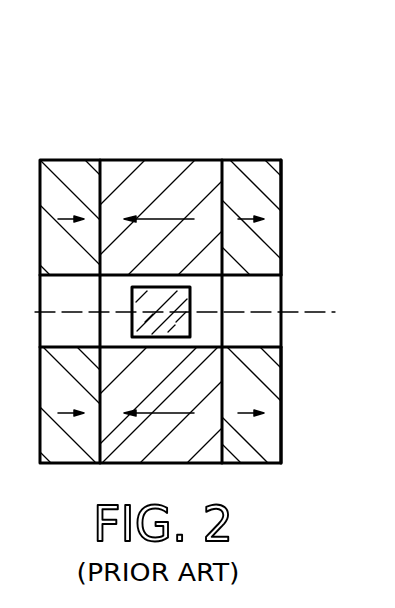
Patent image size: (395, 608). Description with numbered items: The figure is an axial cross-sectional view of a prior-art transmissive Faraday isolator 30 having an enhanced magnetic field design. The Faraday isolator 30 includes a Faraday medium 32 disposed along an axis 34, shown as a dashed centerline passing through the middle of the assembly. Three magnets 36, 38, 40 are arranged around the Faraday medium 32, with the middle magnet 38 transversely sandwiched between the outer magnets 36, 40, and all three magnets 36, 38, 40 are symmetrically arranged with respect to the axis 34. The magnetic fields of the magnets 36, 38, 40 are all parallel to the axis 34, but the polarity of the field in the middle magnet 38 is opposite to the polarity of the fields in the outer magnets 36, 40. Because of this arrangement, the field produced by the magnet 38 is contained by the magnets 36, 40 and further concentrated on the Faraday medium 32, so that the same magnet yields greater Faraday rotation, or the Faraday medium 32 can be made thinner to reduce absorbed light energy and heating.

The transmissive Faraday isolator 30 is at (165, 88).
The Faraday medium 32 is at (190, 322).
The axis 34 is at (281, 310).
The magnet 36 is at (66, 160).
The magnet 38 is at (191, 160).
The magnet 40 is at (281, 160).